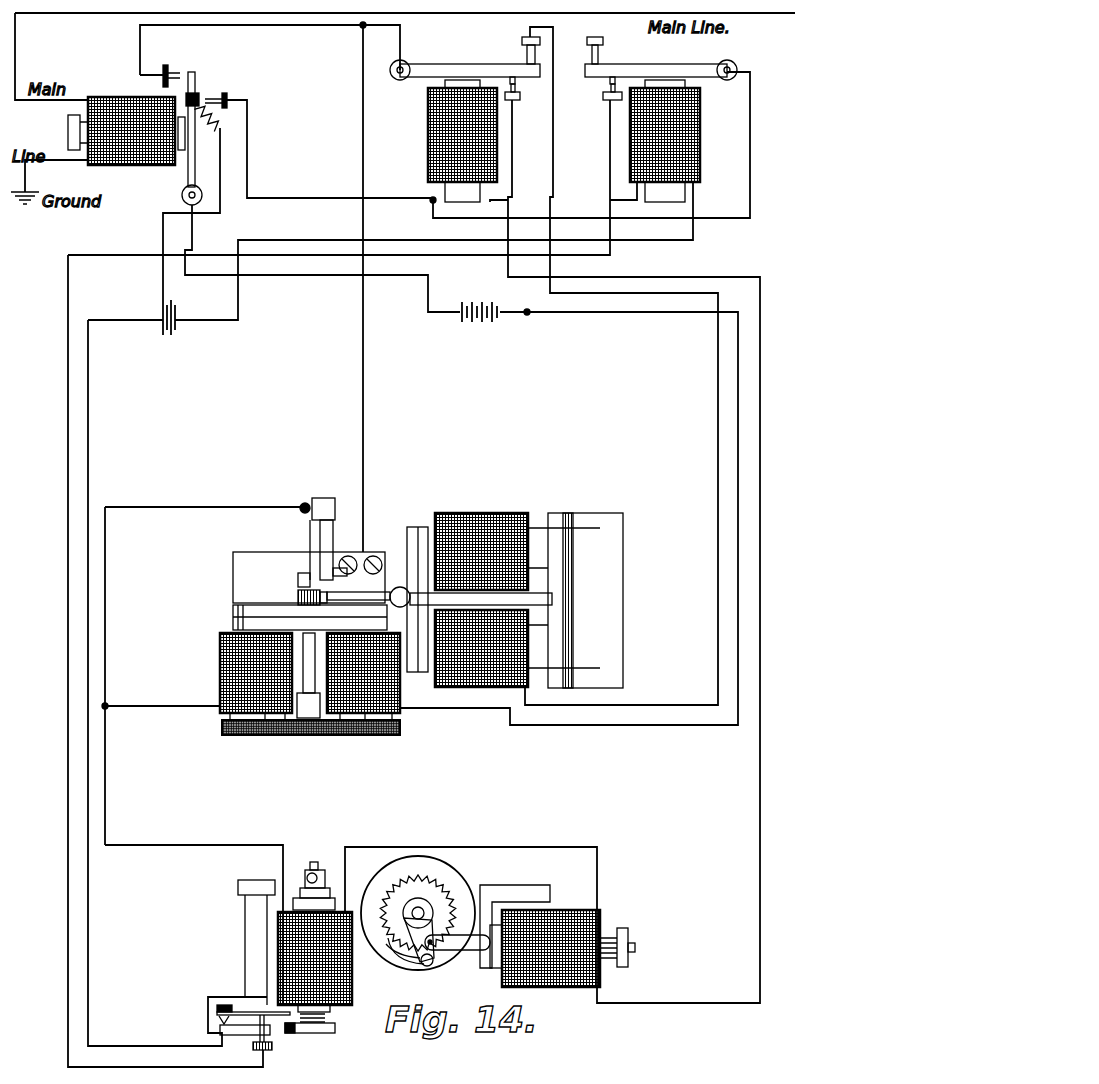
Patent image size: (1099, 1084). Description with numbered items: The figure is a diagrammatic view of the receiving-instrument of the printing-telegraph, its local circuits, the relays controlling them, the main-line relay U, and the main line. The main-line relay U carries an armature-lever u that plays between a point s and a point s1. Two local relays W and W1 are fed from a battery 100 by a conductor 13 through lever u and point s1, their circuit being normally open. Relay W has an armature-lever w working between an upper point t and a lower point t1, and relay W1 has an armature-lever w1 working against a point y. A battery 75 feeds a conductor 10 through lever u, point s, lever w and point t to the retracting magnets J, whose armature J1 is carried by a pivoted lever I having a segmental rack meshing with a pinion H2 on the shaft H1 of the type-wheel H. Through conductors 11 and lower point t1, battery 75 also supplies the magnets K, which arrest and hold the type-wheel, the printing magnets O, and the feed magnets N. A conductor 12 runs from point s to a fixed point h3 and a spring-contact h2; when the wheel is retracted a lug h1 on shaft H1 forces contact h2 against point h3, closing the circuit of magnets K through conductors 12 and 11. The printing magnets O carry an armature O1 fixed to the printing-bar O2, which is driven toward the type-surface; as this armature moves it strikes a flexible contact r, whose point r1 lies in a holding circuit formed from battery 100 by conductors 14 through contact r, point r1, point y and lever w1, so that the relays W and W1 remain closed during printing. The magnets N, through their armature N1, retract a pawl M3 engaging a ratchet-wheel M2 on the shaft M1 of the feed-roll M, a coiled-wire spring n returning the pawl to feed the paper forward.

The conductor 10 is at (419, 363).
The conductor 11 is at (442, 552).
The conductor 12 is at (234, 435).
The conductor 13 is at (429, 210).
The conductor 14 is at (396, 569).
The battery 75 is at (498, 308).
The battery 100 is at (183, 317).
The main-line relay U is at (126, 131).
The contact-point s is at (182, 128).
The contact-point s1 is at (213, 94).
The armature-lever u is at (206, 124).
The armature-lever w is at (465, 64).
The contact-point t is at (520, 52).
The lower contact-point t1 is at (520, 89).
The relay W is at (462, 141).
The relay W1 is at (665, 141).
The armature-lever w1 is at (661, 58).
The contact-point y is at (605, 89).
The spring-contact h2 is at (309, 539).
The circuit-closer h1 is at (291, 579).
The fixed contact-point h3 is at (335, 577).
The pinion H2 is at (310, 591).
The pivoted lever I is at (439, 588).
The armature J1 is at (318, 606).
The electro-magnets K is at (310, 676).
The shaft H1 is at (305, 675).
The type-wheel H is at (308, 730).
The electro-magnets J is at (515, 600).
The electro-magnets O is at (315, 955).
The armature O1 is at (330, 1033).
The printing-bar O2 is at (312, 876).
The flexible contact r is at (253, 957).
The contact-point r1 is at (271, 1043).
The feed-roll M is at (418, 913).
The shaft M1 is at (424, 913).
The ratchet-wheel M2 is at (417, 913).
The pawl M3 is at (392, 952).
The electro-magnets N is at (512, 936).
The armature N1 is at (634, 940).
The coiled-wire spring n is at (608, 956).